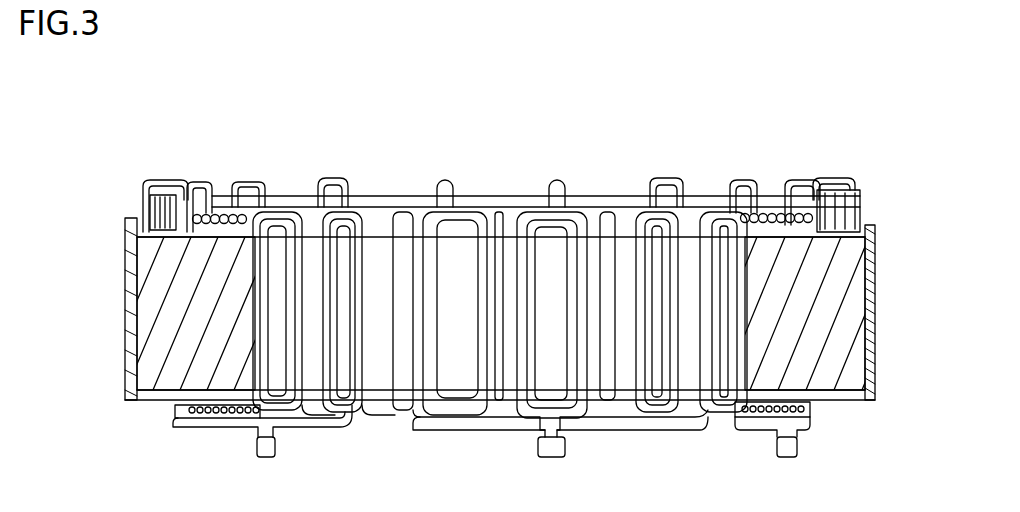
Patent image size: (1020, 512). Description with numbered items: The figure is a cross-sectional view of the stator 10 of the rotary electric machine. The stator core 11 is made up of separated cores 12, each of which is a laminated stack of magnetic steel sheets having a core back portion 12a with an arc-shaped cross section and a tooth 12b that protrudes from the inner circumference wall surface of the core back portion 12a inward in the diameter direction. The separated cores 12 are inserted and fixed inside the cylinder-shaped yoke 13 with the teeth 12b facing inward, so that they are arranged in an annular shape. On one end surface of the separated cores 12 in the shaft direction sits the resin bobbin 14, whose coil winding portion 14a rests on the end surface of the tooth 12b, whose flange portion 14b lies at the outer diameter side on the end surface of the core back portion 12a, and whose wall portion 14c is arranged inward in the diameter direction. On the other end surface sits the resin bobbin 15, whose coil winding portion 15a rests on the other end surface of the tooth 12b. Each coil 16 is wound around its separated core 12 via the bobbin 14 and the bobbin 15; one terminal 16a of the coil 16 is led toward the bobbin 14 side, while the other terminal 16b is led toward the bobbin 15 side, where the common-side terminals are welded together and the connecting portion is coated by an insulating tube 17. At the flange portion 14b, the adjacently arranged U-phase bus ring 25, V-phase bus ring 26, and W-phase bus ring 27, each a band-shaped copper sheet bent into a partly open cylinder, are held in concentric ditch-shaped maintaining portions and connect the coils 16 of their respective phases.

The stator 10 is at (125, 140).
The stator core 11 is at (148, 258).
The separated core 12 is at (178, 296).
The core back portion 12a is at (500, 385).
The tooth 12b is at (455, 380).
The yoke 13 is at (872, 330).
The bobbin 14 is at (128, 213).
The coil winding portion 14a is at (222, 195).
The flange portion 14b is at (143, 200).
The wall portion 14c is at (185, 195).
The bobbin 15 is at (160, 405).
The coil winding portion 15a is at (210, 428).
The coil 16 is at (780, 190).
The terminal 16a is at (330, 195).
The terminal 16b is at (318, 432).
The insulating tube 17 is at (570, 447).
The U-phase bus ring 25 is at (817, 178).
The V-phase bus ring 26 is at (833, 193).
The W-phase bus ring 27 is at (857, 193).